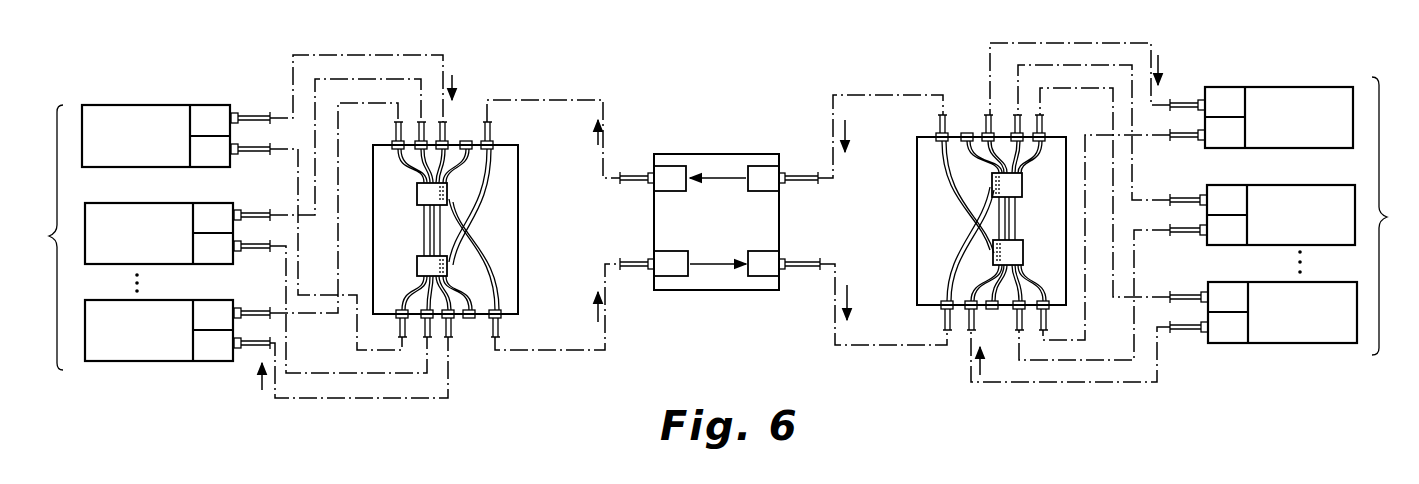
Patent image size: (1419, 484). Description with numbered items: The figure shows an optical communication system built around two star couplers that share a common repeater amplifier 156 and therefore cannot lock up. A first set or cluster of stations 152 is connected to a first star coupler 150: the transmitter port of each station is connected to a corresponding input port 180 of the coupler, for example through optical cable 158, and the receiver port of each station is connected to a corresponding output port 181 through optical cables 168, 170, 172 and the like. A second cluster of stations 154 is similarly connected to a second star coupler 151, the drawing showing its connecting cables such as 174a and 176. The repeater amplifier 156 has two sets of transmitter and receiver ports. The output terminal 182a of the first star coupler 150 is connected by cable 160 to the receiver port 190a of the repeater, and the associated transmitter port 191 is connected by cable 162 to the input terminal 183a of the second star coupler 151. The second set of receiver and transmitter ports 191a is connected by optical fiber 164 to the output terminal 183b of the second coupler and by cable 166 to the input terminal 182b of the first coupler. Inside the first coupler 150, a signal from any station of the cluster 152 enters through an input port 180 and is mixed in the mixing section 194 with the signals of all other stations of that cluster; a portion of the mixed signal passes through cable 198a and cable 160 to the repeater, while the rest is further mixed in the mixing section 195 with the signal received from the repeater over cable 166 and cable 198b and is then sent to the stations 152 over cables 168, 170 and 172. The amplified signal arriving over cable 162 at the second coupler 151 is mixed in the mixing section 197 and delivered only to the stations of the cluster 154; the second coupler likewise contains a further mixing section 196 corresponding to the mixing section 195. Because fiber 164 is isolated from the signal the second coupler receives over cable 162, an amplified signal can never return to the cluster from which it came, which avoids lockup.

The first star coupler 150 is at (520, 164).
The second star coupler 151 is at (917, 233).
The first set of stations 152 is at (54, 236).
The second set of stations 154 is at (1388, 216).
The repeater amplifier 156 is at (737, 293).
The optical cable 158 is at (374, 55).
The optical cable 160 is at (607, 350).
The cable 162 is at (880, 346).
The optical fiber 164 is at (880, 94).
The cable 166 is at (604, 100).
The optical cable 168 is at (357, 352).
The optical cable 170 is at (373, 375).
The optical cable 172 is at (405, 398).
The optical fiber link to station S1 receiver 174a is at (1148, 43).
The optical fiber link from station SM transmitter 176 is at (1138, 382).
The input port 180 is at (450, 140).
The output port 181 is at (452, 340).
The output terminal 182a is at (502, 318).
The input terminal 182b is at (492, 141).
The input terminal 183a is at (968, 332).
The output terminal 183b is at (942, 133).
The receiver port 190a is at (653, 274).
The transmitter port 191 is at (785, 262).
The second set of receiver and transmitter ports 191a is at (645, 186).
The mixing section 194 is at (417, 201).
The mixing section 195 is at (417, 262).
The optical coupler (output splitting) 196 is at (1023, 247).
The mixing section 197 is at (1022, 186).
The optical cable 198a is at (478, 266).
The optical cable 198b is at (476, 198).